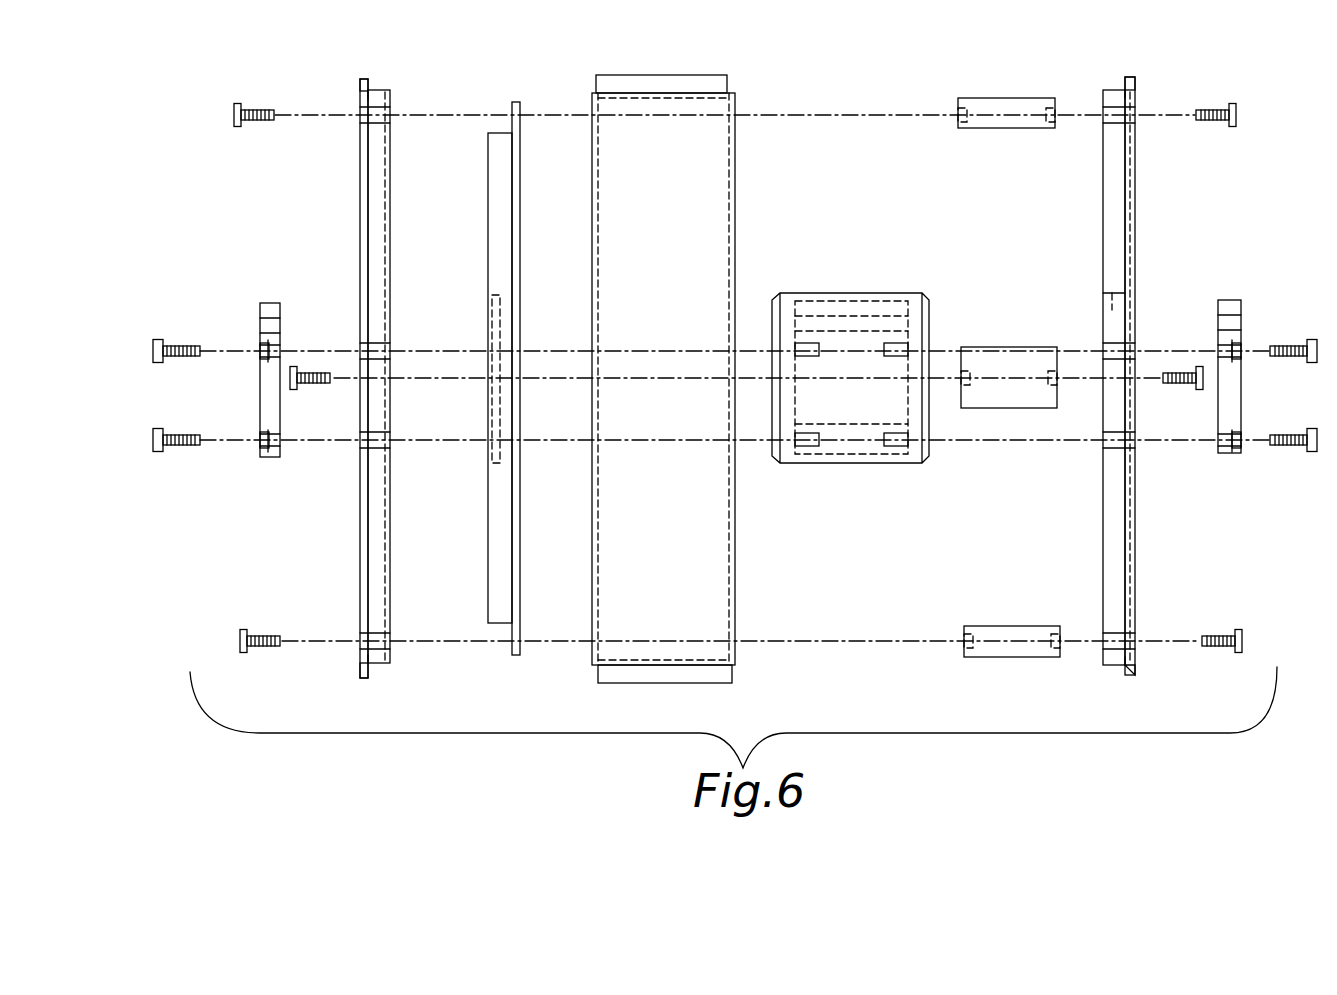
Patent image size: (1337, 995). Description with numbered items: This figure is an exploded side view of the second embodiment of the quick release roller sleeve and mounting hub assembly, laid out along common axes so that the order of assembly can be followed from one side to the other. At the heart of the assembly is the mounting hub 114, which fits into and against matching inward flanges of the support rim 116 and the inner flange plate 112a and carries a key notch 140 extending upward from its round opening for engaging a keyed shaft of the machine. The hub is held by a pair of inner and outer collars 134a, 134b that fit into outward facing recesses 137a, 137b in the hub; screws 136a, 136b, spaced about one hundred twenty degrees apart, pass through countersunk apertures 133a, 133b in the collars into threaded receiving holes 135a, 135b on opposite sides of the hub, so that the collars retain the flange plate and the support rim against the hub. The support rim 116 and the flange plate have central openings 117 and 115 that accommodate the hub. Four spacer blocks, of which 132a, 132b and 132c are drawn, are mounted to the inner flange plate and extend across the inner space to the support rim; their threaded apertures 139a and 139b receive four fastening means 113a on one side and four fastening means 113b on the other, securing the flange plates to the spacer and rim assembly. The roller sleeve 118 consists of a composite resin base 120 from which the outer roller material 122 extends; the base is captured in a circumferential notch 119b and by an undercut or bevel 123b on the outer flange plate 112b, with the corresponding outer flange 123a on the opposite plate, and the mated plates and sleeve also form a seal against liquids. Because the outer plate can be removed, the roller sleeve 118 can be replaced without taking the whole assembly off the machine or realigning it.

The inner flange plate 112a is at (1133, 177).
The outer flange plate 112b is at (366, 238).
The fastening means 113a is at (1237, 112).
The fastening means 113b is at (250, 103).
The mounting hub 114 is at (872, 293).
The central opening 115 is at (1117, 297).
The support rim 116 is at (517, 142).
The central opening 117 is at (510, 315).
The roller sleeve 118 is at (732, 127).
The circumferential notch 119b is at (370, 90).
The base 120 is at (620, 97).
The outer roller material 122 is at (695, 77).
The outer flange 123a is at (1124, 87).
The undercut or bevel 123b is at (370, 88).
The spacer block 132a is at (1037, 100).
The spacer block 132b is at (1000, 405).
The spacer block 132c is at (1020, 647).
The countersunk apertures 133a is at (1240, 440).
The countersunk apertures 133b is at (258, 363).
The inner collar 134a is at (1227, 300).
The outer collar 134b is at (268, 303).
The threaded receiving holes 135a is at (893, 345).
The threaded receiving holes 135b is at (805, 348).
The screws 136a is at (1316, 343).
The screws 136b is at (195, 345).
The outward facing recess 137a is at (915, 323).
The outward facing recess 137b is at (788, 395).
The threaded apertures 139a is at (1053, 113).
The threaded apertures 139b is at (958, 113).
The key notch 140 is at (813, 318).